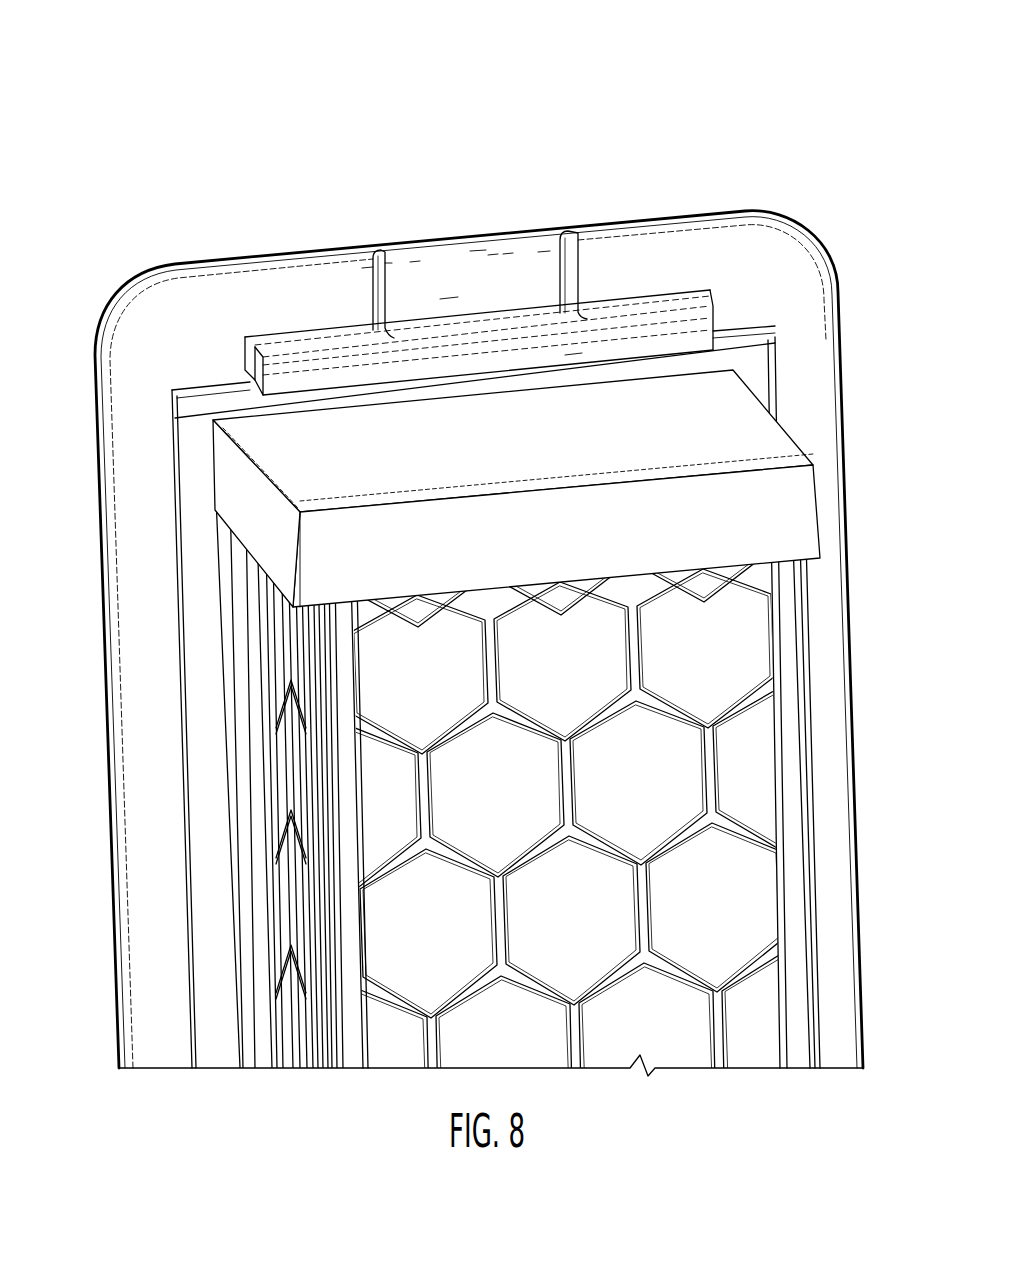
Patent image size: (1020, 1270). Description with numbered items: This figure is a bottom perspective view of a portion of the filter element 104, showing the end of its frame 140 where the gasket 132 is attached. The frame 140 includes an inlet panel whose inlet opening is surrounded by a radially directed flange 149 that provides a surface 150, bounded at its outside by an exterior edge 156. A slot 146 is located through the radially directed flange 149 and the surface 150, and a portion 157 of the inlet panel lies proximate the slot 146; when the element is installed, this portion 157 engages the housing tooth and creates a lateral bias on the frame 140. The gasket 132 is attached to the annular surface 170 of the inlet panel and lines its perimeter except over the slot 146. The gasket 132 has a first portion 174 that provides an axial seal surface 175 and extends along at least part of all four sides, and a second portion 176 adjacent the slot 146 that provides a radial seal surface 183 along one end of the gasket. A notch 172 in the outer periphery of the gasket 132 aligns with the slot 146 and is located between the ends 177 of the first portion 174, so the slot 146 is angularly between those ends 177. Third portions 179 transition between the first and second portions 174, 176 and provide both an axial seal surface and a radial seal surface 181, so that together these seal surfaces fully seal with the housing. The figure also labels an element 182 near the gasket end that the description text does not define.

The filter element 104 is at (853, 199).
The gasket 132 is at (763, 270).
The first portion 174 is at (152, 350).
The axial seal surface 175 is at (148, 520).
The third portions 179 is at (287, 302).
The frame 140 is at (383, 257).
The exterior edge 156 is at (400, 250).
The radially directed flange 149 is at (417, 257).
The slot 146 is at (448, 288).
The notch 172 is at (477, 240).
The portion of the inlet panel 157 is at (493, 250).
The surface 150 is at (508, 248).
The annular surface 170 is at (543, 248).
The ends 177 is at (403, 292).
The second portion 176 is at (570, 353).
The radial seal surface 181 is at (312, 305).
The guide surface 182 is at (330, 340).
The radial seal surface 183 is at (478, 318).